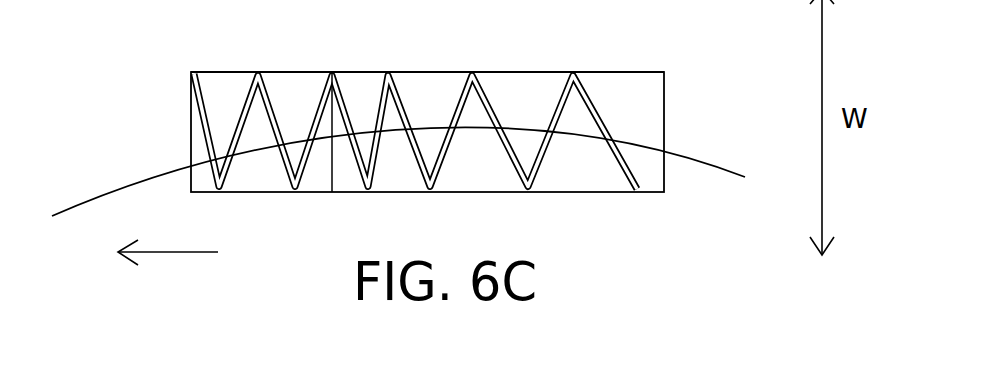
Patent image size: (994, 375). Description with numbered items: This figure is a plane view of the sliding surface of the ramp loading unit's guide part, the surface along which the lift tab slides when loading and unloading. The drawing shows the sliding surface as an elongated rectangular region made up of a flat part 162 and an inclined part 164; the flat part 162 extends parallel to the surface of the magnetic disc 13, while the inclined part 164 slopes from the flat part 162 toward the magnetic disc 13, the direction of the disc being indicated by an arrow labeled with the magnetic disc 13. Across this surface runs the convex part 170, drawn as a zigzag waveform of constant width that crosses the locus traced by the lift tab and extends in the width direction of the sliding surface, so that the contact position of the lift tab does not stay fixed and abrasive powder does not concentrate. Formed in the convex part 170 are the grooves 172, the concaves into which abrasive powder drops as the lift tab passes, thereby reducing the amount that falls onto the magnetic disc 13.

The magnetic disc 13 is at (187, 255).
The flat part 162 is at (628, 80).
The inclined part 164 is at (223, 80).
The convex part 170 is at (605, 130).
The grooves 172 is at (512, 78).